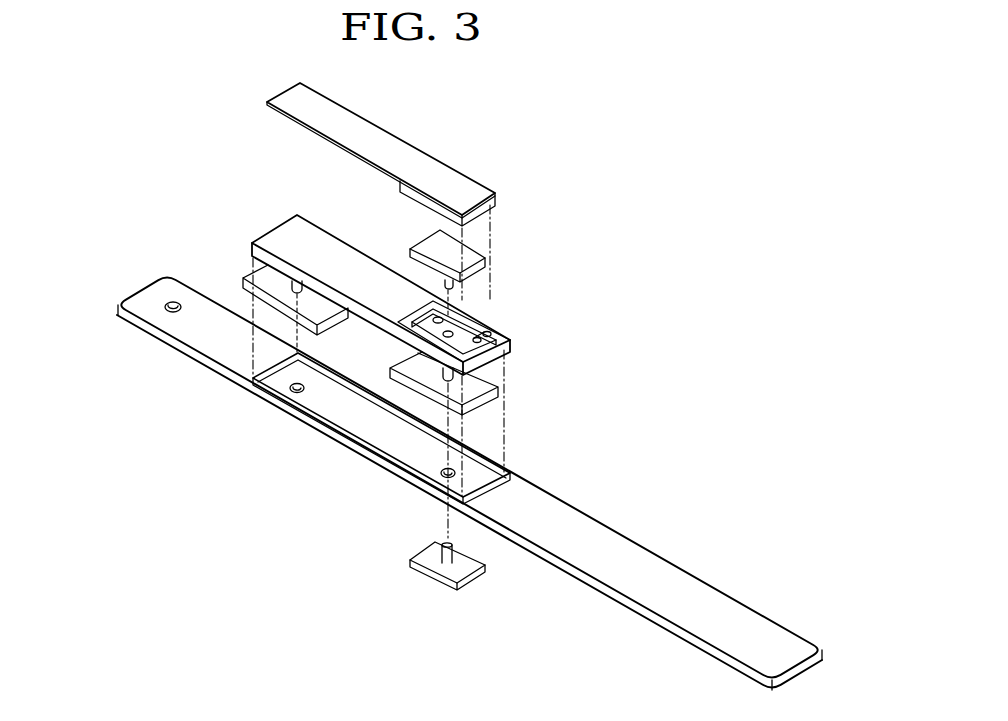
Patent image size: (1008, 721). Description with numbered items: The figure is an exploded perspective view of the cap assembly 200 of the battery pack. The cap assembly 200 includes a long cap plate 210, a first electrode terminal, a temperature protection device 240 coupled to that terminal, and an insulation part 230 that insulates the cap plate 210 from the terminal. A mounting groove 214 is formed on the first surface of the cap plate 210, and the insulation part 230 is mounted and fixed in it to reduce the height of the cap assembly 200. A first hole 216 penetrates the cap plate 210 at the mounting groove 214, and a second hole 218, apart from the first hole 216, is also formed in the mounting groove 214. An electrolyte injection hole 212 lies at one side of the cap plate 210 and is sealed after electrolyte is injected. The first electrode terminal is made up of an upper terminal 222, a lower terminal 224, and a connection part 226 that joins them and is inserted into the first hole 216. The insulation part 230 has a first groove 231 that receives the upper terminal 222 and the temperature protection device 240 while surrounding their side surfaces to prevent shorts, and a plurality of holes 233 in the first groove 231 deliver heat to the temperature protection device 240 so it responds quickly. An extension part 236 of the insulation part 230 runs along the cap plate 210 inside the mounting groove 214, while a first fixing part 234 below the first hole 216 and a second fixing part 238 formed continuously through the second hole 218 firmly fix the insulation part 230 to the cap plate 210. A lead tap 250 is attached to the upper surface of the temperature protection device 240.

The cap assembly 200 is at (631, 232).
The cap plate 210 is at (592, 521).
The electrolyte injection hole 212 is at (165, 306).
The mounting groove 214 is at (357, 417).
The first hole 216 is at (440, 472).
The second hole 218 is at (297, 388).
The upper terminal 222 is at (418, 251).
The lower terminal 224 is at (471, 578).
The connection part 226 is at (440, 567).
The insulation part 230 is at (268, 224).
The first groove 231 is at (479, 321).
The holes 233 is at (506, 334).
The first fixing part 234 is at (488, 398).
The extension part 236 is at (301, 232).
The second fixing part 238 is at (243, 277).
The temperature protection device 240 is at (497, 201).
The lead tap 250 is at (451, 186).